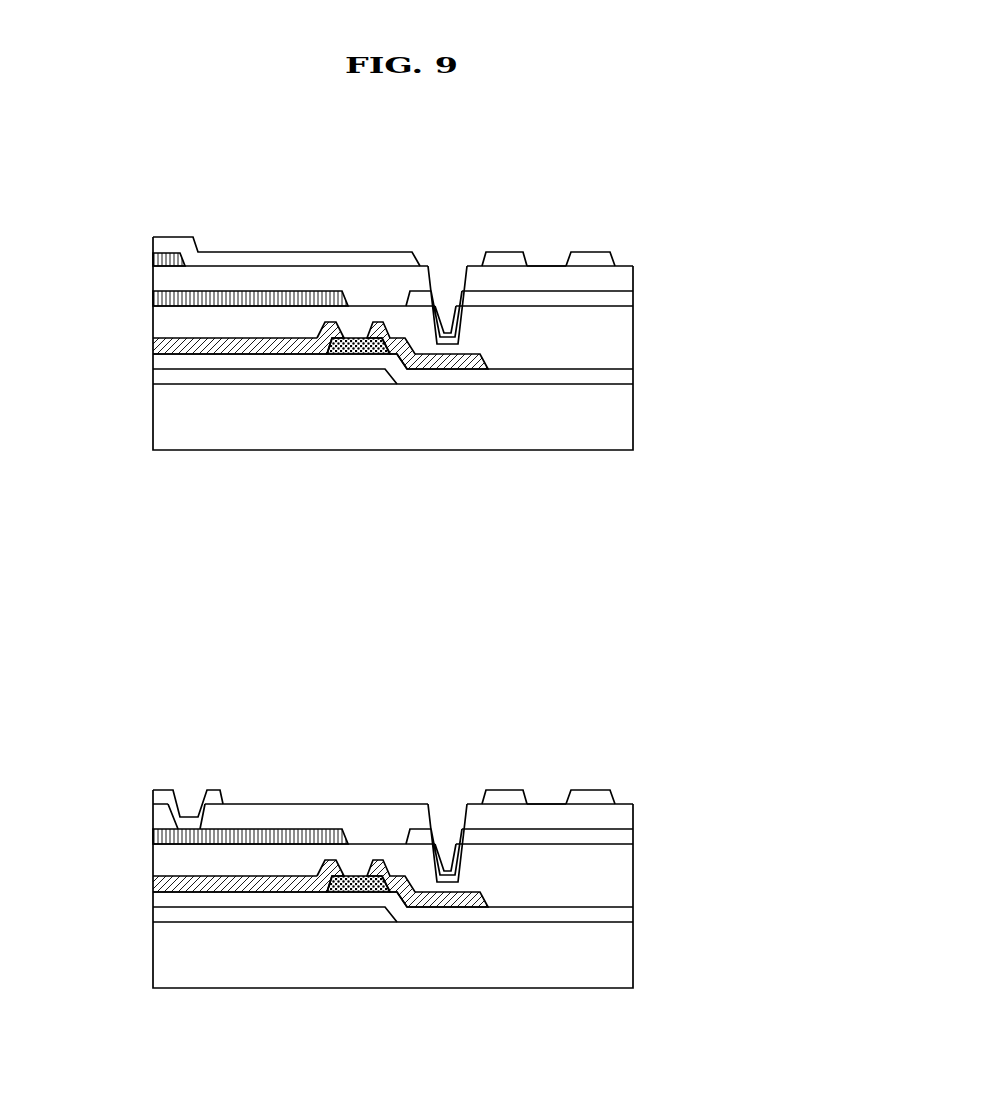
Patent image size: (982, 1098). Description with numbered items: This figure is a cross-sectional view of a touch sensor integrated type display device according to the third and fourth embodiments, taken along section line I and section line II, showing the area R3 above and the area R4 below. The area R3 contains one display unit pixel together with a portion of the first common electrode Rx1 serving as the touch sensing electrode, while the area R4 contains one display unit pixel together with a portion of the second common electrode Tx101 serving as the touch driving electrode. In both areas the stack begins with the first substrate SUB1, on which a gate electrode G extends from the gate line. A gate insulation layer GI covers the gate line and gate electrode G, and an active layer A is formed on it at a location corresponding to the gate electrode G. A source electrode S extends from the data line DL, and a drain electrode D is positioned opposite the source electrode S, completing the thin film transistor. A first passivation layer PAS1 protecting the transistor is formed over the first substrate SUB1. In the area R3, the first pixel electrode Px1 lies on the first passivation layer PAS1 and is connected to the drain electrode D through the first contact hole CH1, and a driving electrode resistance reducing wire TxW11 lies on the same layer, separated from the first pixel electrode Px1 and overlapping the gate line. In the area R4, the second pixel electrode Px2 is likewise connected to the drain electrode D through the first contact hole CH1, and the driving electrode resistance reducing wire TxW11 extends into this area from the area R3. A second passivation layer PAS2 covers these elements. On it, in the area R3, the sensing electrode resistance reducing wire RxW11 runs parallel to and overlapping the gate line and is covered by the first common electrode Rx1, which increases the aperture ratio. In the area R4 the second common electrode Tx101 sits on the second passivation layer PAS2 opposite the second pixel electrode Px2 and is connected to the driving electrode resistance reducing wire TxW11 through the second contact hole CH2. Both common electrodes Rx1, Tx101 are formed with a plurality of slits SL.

The area R3 is at (95, 209).
The area R4 is at (93, 761).
The first substrate SUB1 is at (624, 423).
The second passivation layer PAS2 is at (624, 276).
The first pixel electrode Px1 is at (624, 299).
The second pixel electrode Px2 is at (624, 837).
The first passivation layer PAS1 is at (624, 340).
The gate insulation layer GI is at (624, 377).
The gate electrode G is at (333, 377).
The driving electrode resistance reducing wire TxW11 is at (250, 297).
The sensing electrode resistance reducing wire RxW11 is at (171, 262).
The first common electrode Rx1 is at (592, 252).
The second common electrode Tx101 is at (597, 791).
The first contact hole CH1 is at (447, 275).
The second contact hole CH2 is at (188, 797).
The slit SL is at (548, 263).
The data line DL is at (208, 346).
The source electrode S is at (299, 346).
The active layer A is at (358, 346).
The drain electrode D is at (421, 362).
The line I-I' I is at (392, 470).
The line II-II' II is at (393, 1008).